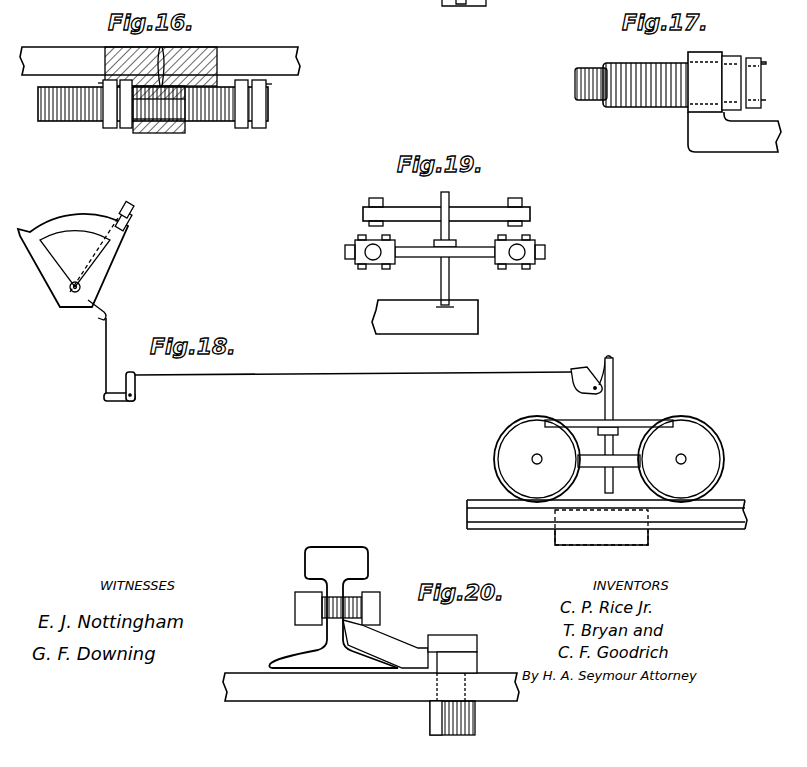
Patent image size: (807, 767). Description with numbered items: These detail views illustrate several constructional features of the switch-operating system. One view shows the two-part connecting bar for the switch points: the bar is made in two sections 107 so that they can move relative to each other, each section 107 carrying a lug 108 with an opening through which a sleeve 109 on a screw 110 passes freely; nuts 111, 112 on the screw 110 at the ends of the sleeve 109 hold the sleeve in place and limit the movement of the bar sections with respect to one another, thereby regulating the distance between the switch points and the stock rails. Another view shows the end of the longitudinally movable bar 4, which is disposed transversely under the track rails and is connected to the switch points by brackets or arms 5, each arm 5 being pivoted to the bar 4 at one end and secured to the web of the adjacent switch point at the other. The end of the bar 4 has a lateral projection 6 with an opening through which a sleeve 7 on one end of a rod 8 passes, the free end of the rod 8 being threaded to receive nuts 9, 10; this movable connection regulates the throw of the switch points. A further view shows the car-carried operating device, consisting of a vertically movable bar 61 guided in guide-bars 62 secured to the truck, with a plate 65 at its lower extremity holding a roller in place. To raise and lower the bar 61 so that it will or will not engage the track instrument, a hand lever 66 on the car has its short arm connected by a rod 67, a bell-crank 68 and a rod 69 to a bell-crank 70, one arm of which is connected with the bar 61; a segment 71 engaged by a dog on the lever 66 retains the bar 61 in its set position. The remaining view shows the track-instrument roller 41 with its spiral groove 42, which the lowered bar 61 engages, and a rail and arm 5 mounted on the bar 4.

In FIG. 16, the bar section 107 is at (160, 61).
In FIG. 16, the lug 108 is at (150, 134).
In FIG. 16, the sleeve 109 is at (153, 115).
In FIG. 16, the screw 110 is at (192, 128).
In FIG. 16, the nut 111 is at (245, 112).
In FIG. 16, the nut 112 is at (265, 112).
In FIG. 17, the longitudinally movable bar 4 is at (752, 148).
In FIG. 17, the lateral projection 6 is at (704, 66).
In FIG. 17, the sleeve 7 is at (640, 66).
In FIG. 17, the rod 8 is at (598, 72).
In FIG. 17, the nut 9 is at (733, 56).
In FIG. 17, the nut 10 is at (756, 58).
In FIG. 19, the roller 41 is at (425, 317).
In FIG. 18, the roller 41 is at (583, 545).
In FIG. 19, the spiral groove 42 is at (456, 308).
In FIG. 19, the vertically movable bar 61 is at (450, 270).
In FIG. 18, the vertically movable bar 61 is at (613, 480).
In FIG. 19, the guide-bar 62 is at (484, 222).
In FIG. 18, the guide-bar 62 is at (640, 420).
In FIG. 19, the plate 65 is at (462, 6).
In FIG. 18, the hand lever 66 is at (132, 222).
In FIG. 18, the rod 67 is at (105, 344).
In FIG. 18, the bell-crank 68 is at (124, 402).
In FIG. 18, the rod 69 is at (353, 382).
In FIG. 18, the bell-crank 70 is at (584, 374).
In FIG. 18, the segment 71 is at (120, 266).
In FIG. 20, the bracket or arm 5 is at (400, 645).